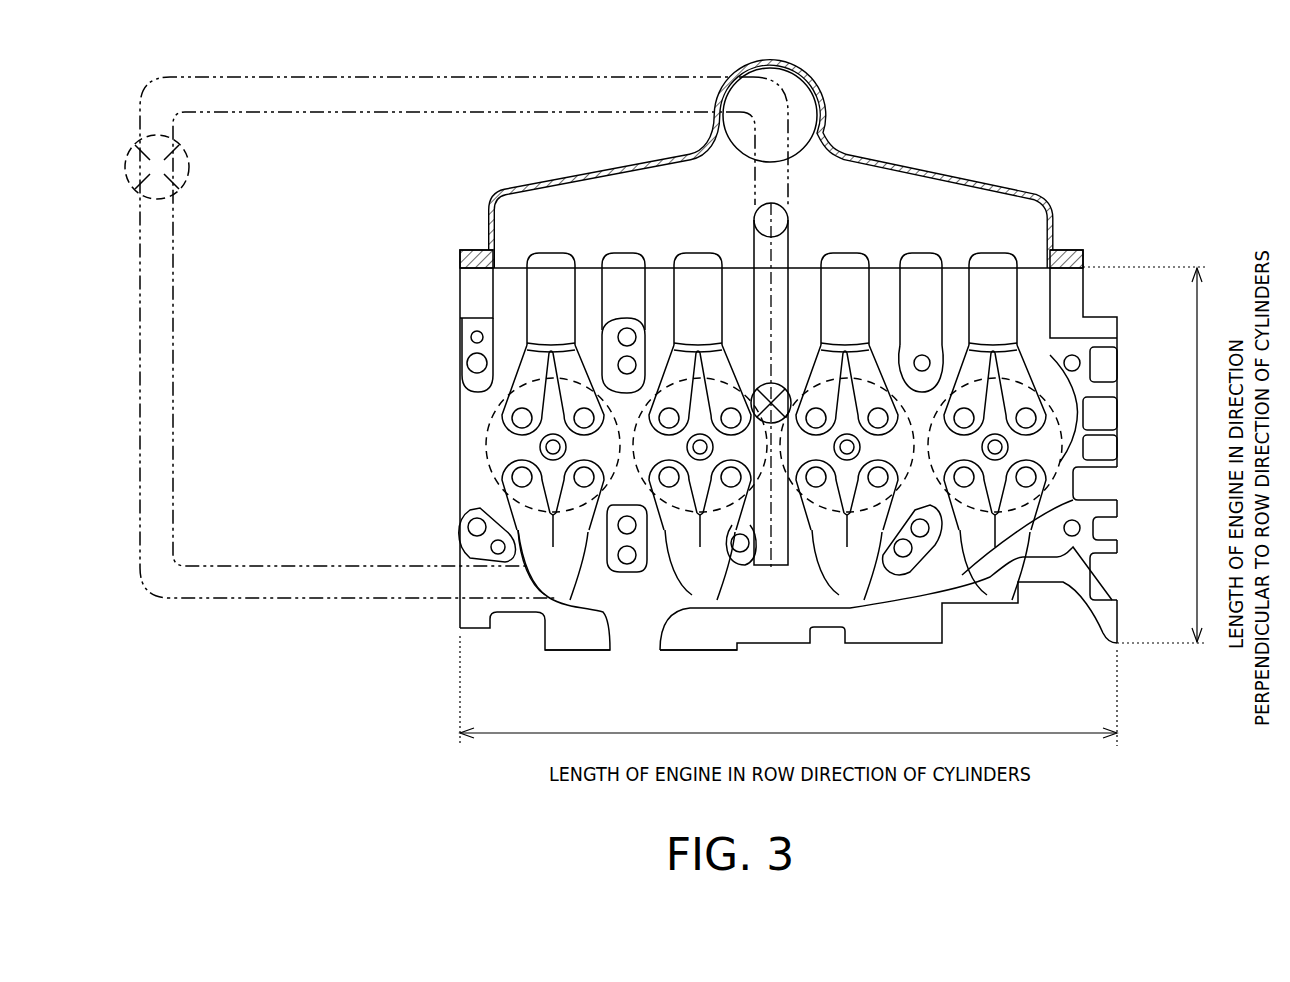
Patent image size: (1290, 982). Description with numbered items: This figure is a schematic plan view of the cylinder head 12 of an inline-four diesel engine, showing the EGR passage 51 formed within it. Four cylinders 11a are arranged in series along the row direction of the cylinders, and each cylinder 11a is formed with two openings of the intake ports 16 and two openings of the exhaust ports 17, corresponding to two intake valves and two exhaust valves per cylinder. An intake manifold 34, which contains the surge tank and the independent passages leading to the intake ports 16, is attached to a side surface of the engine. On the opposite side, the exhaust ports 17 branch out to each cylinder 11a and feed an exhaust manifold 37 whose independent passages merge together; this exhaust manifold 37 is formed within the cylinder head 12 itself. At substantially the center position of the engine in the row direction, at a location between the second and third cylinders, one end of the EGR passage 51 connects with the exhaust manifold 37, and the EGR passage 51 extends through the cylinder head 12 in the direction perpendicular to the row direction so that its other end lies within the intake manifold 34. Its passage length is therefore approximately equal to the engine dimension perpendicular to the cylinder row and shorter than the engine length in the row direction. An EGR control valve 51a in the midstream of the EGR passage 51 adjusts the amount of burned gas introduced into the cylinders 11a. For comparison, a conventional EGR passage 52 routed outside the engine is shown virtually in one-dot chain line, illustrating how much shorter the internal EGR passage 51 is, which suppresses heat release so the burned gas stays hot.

The cylinder head 12 is at (460, 428).
The cylinders 11a is at (488, 472).
The intake ports 16 is at (567, 322).
The exhaust ports 17 is at (533, 540).
The intake manifold 34 is at (977, 180).
The exhaust manifold 37 is at (781, 603).
The EGR passage 51 is at (793, 246).
The EGR control valve 51a is at (190, 172).
The conventional EGR passage 52 is at (176, 377).